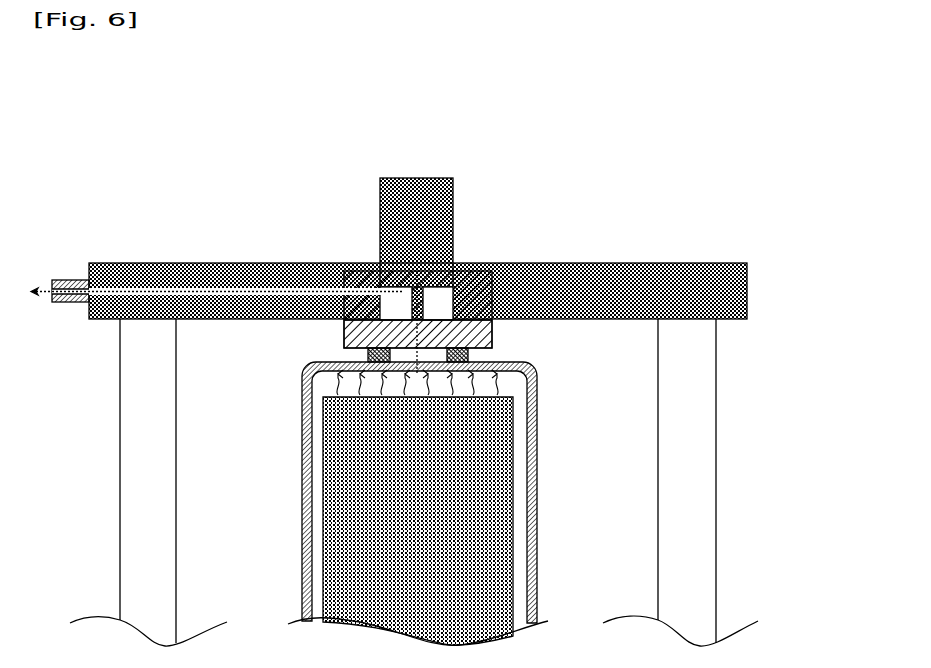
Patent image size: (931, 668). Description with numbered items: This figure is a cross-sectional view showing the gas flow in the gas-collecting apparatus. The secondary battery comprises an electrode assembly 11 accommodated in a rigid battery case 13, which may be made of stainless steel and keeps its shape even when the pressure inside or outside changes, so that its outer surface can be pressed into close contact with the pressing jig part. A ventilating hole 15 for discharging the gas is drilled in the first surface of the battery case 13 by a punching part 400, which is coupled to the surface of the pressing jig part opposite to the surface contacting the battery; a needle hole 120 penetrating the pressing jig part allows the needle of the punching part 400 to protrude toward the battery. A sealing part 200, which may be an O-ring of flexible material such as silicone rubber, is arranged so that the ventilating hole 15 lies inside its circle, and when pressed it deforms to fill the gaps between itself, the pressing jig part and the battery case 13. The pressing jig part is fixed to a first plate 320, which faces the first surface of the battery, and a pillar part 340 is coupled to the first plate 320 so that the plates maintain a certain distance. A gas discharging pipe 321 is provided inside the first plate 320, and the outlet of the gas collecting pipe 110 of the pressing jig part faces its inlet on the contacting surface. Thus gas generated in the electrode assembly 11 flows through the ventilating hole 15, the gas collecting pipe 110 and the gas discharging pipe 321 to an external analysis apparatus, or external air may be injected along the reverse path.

The electrode assembly 11 is at (323, 548).
The battery case 13 is at (302, 497).
The ventilating hole 15 is at (418, 375).
The gas collecting pipe 110 is at (336, 271).
The needle hole 120 is at (492, 338).
The sealing part 200 is at (352, 354).
The first plate 320 is at (643, 262).
The gas discharging pipe 321 is at (138, 263).
The pillar part 340 is at (716, 370).
The punching part 400 is at (412, 178).